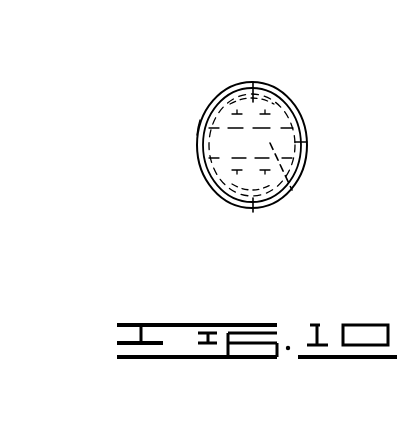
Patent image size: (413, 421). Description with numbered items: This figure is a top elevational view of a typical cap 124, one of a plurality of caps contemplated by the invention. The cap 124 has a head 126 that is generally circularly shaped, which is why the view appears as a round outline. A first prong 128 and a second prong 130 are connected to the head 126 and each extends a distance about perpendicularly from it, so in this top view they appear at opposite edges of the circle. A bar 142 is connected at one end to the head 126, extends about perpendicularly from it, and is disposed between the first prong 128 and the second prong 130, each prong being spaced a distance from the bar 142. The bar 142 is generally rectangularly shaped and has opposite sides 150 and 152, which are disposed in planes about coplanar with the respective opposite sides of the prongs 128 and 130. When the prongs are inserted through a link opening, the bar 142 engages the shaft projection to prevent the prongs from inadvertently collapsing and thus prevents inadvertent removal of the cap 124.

The cap 124 is at (292, 105).
The head 126 is at (200, 129).
The first prong 128 is at (253, 212).
The second prong 130 is at (253, 82).
The bar 142 is at (292, 190).
The opposite side 150 is at (303, 142).
The opposite side 152 is at (206, 146).